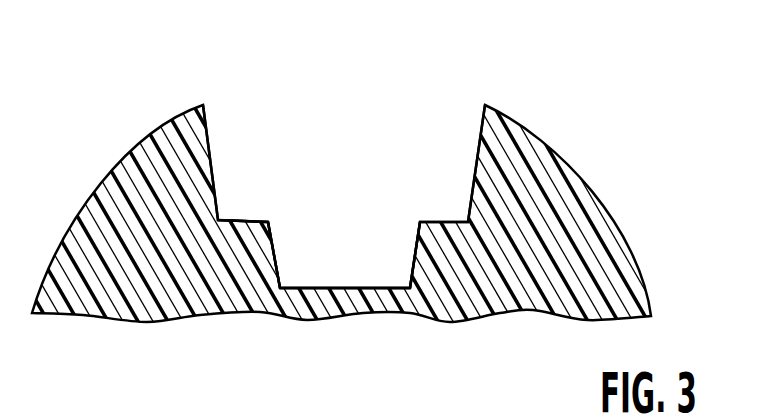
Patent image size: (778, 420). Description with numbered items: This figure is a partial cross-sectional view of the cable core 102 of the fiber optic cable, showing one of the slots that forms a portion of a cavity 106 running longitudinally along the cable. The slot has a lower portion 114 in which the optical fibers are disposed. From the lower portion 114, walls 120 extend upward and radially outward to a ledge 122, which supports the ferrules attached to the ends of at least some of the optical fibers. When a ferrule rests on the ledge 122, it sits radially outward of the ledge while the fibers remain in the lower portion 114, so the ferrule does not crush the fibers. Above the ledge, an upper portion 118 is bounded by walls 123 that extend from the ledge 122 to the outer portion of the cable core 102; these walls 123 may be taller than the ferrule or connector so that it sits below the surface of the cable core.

The cavity 106 is at (371, 183).
The cable core 102 is at (582, 238).
The upper portion 118 is at (447, 152).
The walls 123 is at (210, 132).
The ledge 122 is at (243, 220).
The walls 120 is at (412, 252).
The lower portion 114 is at (391, 267).